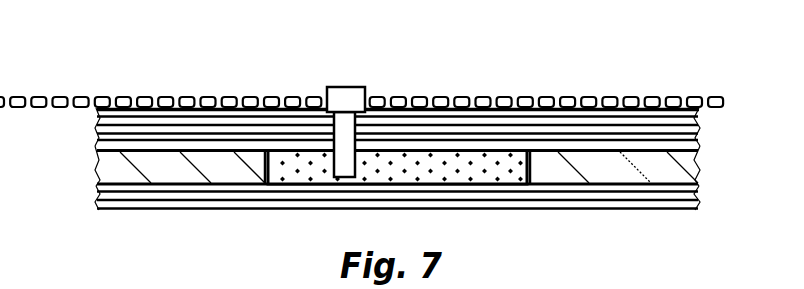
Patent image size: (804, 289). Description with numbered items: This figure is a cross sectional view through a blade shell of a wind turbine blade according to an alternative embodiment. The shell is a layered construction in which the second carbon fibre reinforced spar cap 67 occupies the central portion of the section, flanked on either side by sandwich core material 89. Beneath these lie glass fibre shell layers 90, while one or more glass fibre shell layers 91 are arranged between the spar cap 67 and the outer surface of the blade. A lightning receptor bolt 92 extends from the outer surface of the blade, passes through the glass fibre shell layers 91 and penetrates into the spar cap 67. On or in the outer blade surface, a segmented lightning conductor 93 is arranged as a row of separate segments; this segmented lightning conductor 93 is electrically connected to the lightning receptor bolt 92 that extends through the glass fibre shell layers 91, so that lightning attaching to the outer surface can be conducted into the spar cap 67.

The second carbon fibre reinforced spar cap 67 is at (425, 165).
The sandwich core material 89 is at (110, 165).
The glass fibre shell layers 90 is at (562, 210).
The glass fibre shell layers 91 is at (467, 122).
The lightning receptor bolt 92 is at (350, 90).
The segmented lightning conductor 93 is at (590, 97).